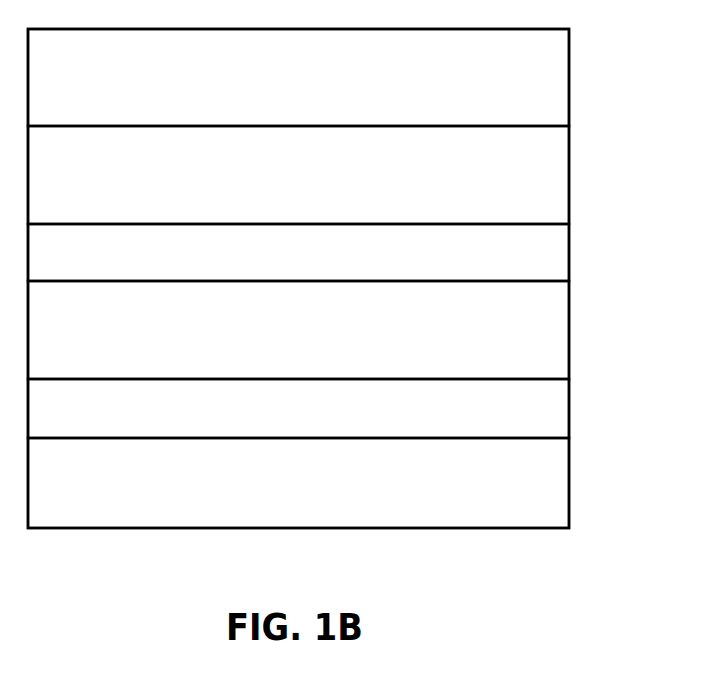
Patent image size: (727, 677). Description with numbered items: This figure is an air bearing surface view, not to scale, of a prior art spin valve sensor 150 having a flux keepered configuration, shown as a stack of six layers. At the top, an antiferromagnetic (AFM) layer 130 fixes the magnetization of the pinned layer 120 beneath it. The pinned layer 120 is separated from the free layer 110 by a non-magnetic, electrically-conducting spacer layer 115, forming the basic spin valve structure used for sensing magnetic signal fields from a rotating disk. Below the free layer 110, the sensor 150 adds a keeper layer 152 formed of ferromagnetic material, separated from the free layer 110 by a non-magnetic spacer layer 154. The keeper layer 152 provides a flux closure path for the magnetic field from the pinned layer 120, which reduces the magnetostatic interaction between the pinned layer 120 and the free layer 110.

The SV sensor 150 is at (538, 576).
The antiferromagnetic (AFM) layer 130 is at (543, 113).
The pinned layer 120 is at (543, 193).
The spacer layer 115 is at (544, 263).
The free layer 110 is at (544, 348).
The spacer layer 154 is at (544, 415).
The keeper layer 152 is at (544, 507).